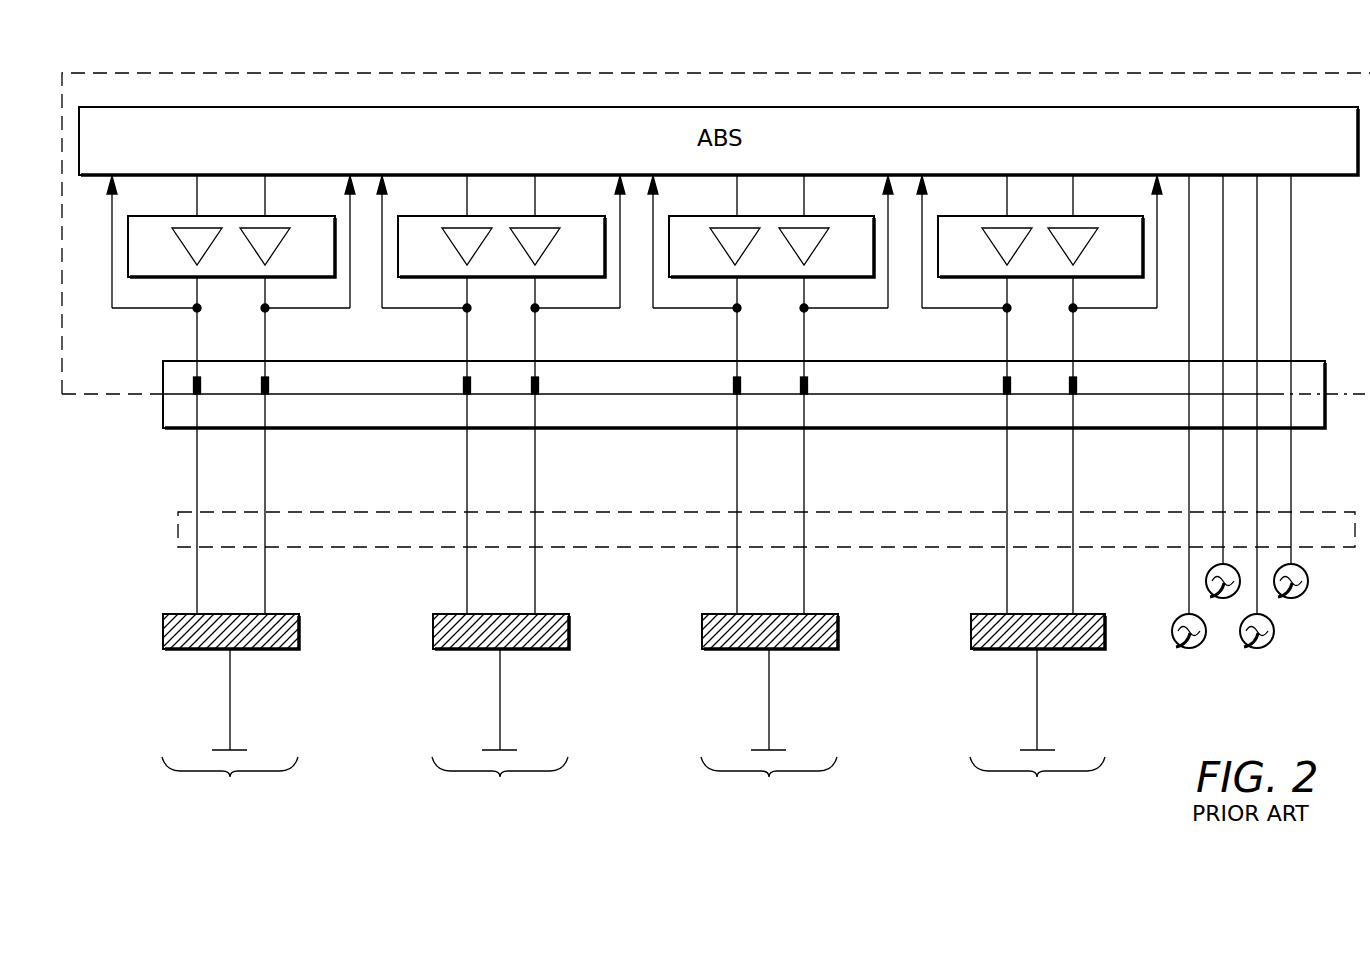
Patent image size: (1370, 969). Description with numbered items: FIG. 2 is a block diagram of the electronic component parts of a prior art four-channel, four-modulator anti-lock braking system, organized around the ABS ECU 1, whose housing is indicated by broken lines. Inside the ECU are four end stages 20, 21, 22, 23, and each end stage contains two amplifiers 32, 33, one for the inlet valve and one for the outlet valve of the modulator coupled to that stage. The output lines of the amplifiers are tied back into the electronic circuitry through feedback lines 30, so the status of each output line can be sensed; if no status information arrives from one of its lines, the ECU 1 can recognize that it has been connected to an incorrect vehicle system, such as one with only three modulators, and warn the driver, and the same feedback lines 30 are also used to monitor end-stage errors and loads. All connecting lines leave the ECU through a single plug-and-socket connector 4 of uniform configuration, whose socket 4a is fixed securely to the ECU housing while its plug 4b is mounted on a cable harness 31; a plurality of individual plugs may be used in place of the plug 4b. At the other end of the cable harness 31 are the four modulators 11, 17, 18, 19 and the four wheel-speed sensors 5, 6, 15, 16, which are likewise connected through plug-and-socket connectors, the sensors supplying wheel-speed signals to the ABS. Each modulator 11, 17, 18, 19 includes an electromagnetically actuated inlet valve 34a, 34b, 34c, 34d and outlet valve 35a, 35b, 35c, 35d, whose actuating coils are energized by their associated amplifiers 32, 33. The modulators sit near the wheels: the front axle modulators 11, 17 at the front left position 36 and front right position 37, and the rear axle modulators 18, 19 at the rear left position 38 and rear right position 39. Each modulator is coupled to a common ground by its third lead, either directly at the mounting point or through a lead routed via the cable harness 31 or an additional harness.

The ABS ECU 1 is at (112, 72).
The plug-and-socket connector 4 is at (1139, 428).
The socket 4a is at (1325, 380).
The plug 4b is at (1327, 422).
The wheel-speed sensor 5 is at (1189, 648).
The wheel-speed sensor 6 is at (1216, 568).
The modulator 11 is at (258, 651).
The wheel-speed sensor 15 is at (1257, 648).
The wheel-speed sensor 16 is at (1291, 598).
The modulator 17 is at (533, 651).
The modulator 18 is at (818, 651).
The modulator 19 is at (1068, 651).
The end stage 20 is at (231, 243).
The end stage 21 is at (517, 215).
The end stage 22 is at (787, 215).
The end stage 23 is at (1056, 215).
The feedback line 30 is at (350, 296).
The cable harness 31 is at (178, 533).
The amplifier 32 is at (190, 228).
The amplifier 33 is at (267, 229).
The inlet valve 34a is at (163, 632).
The inlet valve 34b is at (433, 634).
The inlet valve 34c is at (702, 632).
The inlet valve 34d is at (971, 635).
The outlet valve 35a is at (299, 636).
The outlet valve 35b is at (569, 630).
The outlet valve 35c is at (838, 640).
The outlet valve 35d is at (1105, 640).
The front left position 36 is at (221, 696).
The front right position 37 is at (489, 691).
The rear left position 38 is at (773, 696).
The rear right position 39 is at (1043, 699).